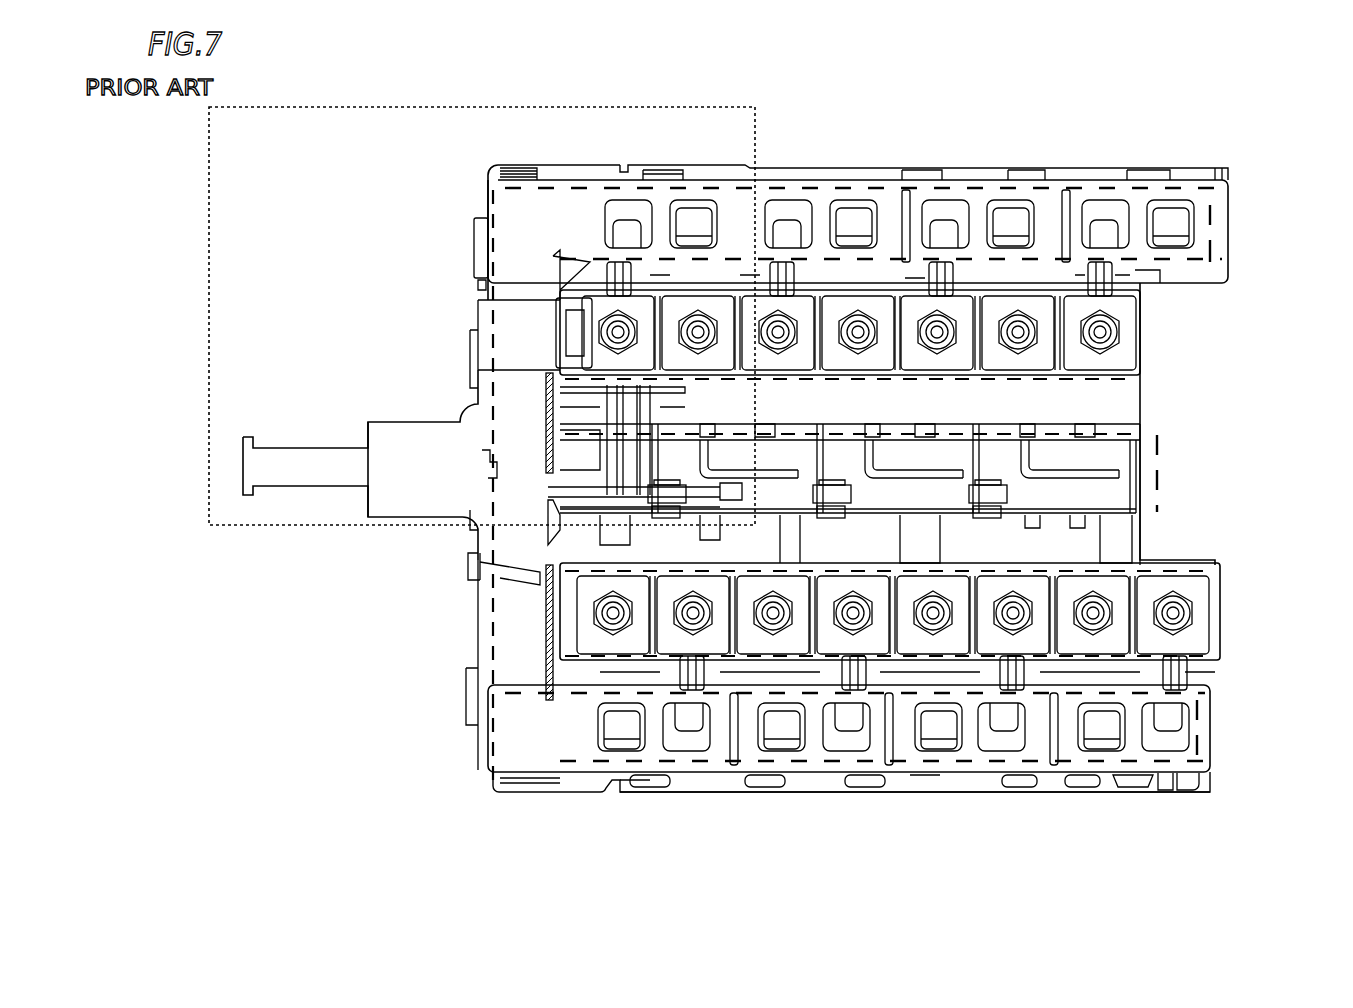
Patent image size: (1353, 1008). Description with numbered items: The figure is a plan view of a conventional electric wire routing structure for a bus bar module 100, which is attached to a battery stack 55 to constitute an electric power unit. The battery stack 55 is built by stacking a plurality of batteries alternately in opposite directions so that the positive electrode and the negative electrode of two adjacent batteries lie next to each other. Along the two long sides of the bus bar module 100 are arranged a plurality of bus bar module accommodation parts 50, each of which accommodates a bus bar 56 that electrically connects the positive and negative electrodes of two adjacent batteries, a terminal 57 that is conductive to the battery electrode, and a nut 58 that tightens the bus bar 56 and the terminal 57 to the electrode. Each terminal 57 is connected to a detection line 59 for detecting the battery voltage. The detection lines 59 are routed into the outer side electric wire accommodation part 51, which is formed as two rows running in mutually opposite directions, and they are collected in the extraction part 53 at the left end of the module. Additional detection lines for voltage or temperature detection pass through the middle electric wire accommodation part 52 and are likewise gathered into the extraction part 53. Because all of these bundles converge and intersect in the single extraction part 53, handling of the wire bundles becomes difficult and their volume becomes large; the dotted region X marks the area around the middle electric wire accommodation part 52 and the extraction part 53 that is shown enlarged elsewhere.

The outer side electric wire accommodation part 51 is at (580, 165).
The battery stack 55 is at (745, 172).
The extraction part 53 is at (287, 446).
The detection line 59 is at (1130, 278).
The terminal 57 is at (1127, 317).
The bus bar module accommodation part 50 is at (1133, 340).
The bus bar 56 is at (853, 372).
The nut 58 is at (933, 357).
The middle electric wire accommodation part 52 is at (1160, 477).
The bus bar module 100 is at (545, 735).
The region X is at (340, 527).